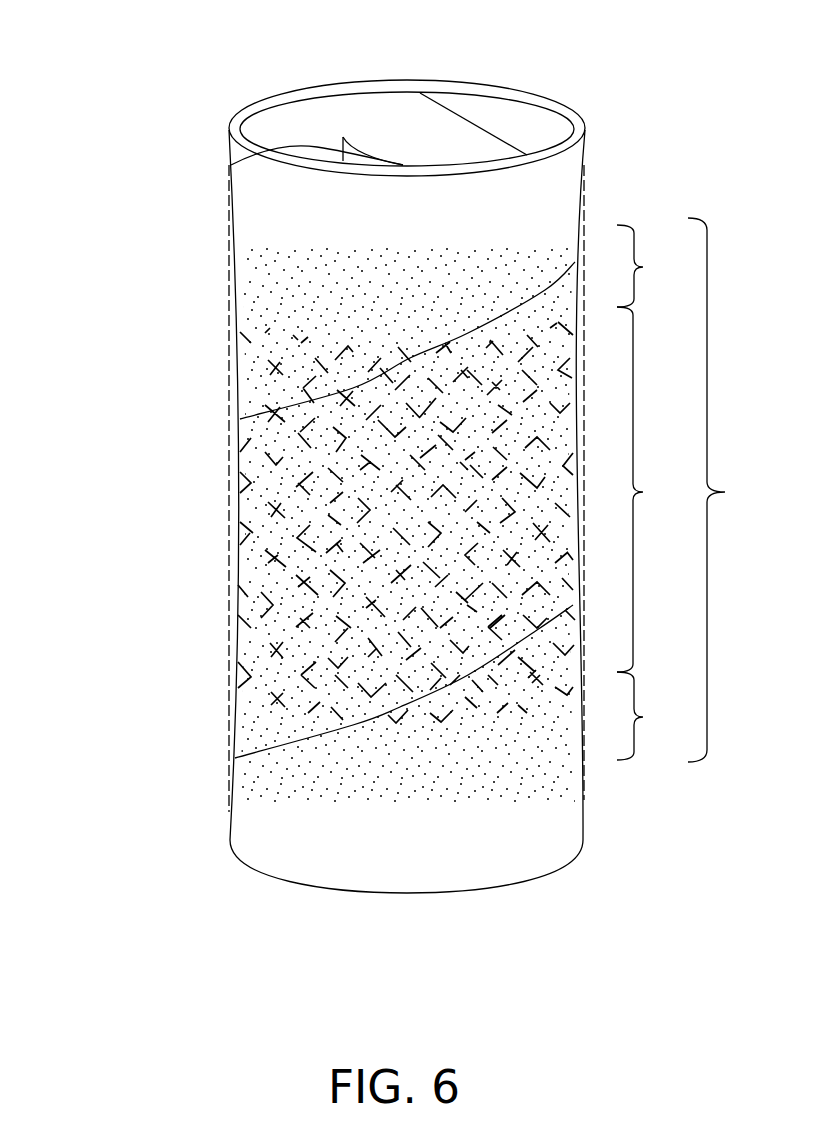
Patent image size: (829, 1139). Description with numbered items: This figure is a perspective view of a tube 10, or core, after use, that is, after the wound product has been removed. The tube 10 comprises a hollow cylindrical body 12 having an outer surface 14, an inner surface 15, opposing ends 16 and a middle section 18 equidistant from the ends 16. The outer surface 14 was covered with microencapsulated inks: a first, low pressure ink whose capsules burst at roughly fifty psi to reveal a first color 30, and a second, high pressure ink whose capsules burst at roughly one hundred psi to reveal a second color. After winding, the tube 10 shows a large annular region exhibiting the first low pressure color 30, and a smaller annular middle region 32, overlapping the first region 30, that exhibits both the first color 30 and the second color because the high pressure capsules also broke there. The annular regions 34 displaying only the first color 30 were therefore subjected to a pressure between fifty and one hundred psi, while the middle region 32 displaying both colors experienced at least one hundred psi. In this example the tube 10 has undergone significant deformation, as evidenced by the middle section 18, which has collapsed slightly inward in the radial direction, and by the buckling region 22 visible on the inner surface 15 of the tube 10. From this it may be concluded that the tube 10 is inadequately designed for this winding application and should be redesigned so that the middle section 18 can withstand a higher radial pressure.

The tube 10 is at (159, 118).
The hollow cylindrical body 12 is at (230, 324).
The outer surface 14 is at (263, 388).
The inner surface 15 is at (275, 127).
The opposing ends 16 is at (577, 126).
The middle section 18 is at (257, 527).
The buckling region 22 is at (232, 165).
The first low pressure color 30 is at (725, 492).
The middle region 32 is at (643, 492).
The annular regions 34 is at (643, 267).